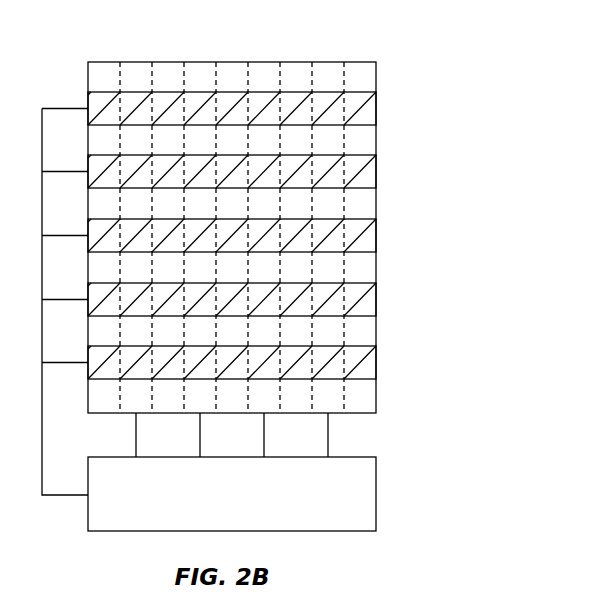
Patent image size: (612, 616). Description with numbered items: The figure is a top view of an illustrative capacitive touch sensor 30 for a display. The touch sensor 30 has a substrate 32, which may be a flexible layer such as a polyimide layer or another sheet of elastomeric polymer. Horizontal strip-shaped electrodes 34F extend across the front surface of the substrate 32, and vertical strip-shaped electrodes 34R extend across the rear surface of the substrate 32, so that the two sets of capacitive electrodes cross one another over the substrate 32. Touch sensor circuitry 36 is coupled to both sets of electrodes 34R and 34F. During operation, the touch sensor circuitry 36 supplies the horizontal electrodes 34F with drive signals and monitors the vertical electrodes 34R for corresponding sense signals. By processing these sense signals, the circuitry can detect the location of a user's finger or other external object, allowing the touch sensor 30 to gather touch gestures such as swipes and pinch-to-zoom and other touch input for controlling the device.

The touch sensor 30 is at (288, 278).
The substrate 32 is at (376, 73).
The vertical strip-shaped electrodes 34R is at (120, 56).
The horizontal strip-shaped electrodes 34F is at (383, 92).
The touch sensor circuitry 36 is at (376, 488).